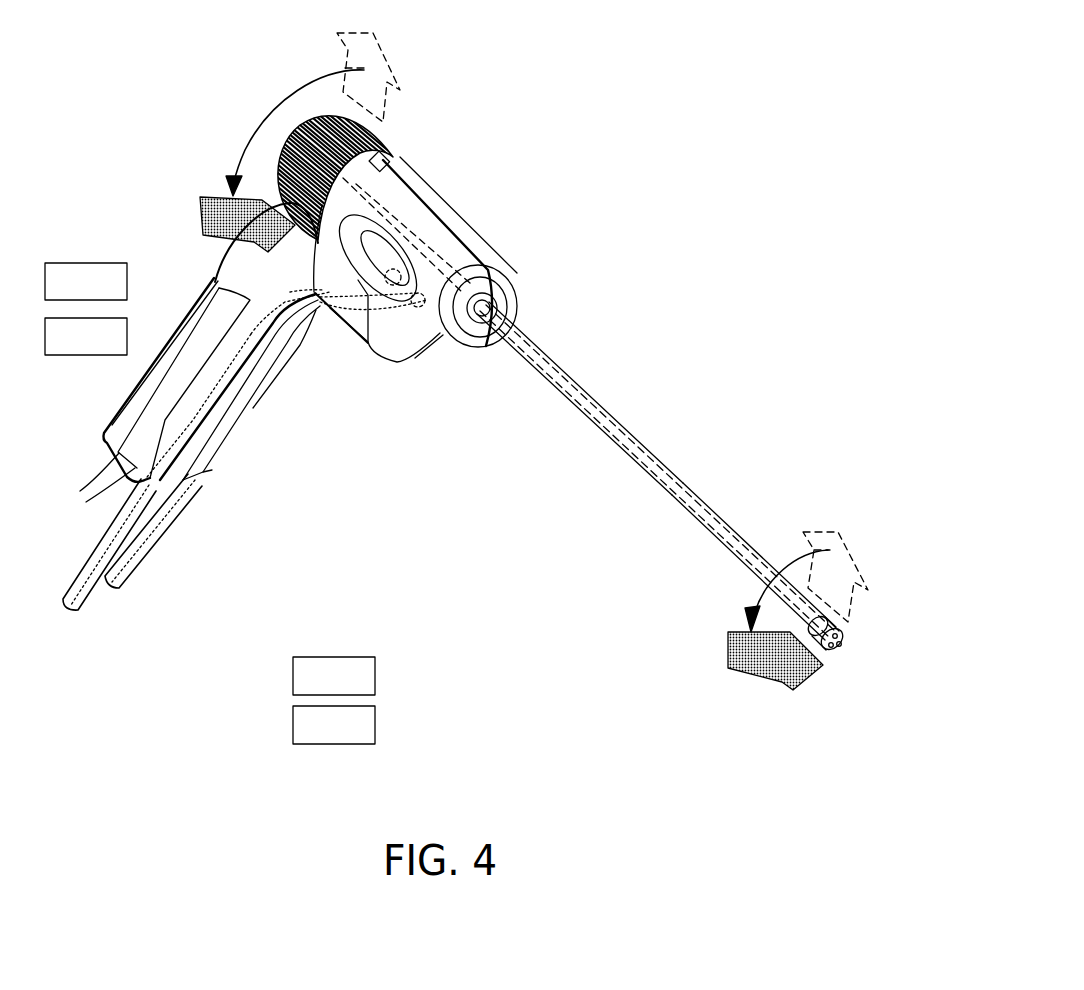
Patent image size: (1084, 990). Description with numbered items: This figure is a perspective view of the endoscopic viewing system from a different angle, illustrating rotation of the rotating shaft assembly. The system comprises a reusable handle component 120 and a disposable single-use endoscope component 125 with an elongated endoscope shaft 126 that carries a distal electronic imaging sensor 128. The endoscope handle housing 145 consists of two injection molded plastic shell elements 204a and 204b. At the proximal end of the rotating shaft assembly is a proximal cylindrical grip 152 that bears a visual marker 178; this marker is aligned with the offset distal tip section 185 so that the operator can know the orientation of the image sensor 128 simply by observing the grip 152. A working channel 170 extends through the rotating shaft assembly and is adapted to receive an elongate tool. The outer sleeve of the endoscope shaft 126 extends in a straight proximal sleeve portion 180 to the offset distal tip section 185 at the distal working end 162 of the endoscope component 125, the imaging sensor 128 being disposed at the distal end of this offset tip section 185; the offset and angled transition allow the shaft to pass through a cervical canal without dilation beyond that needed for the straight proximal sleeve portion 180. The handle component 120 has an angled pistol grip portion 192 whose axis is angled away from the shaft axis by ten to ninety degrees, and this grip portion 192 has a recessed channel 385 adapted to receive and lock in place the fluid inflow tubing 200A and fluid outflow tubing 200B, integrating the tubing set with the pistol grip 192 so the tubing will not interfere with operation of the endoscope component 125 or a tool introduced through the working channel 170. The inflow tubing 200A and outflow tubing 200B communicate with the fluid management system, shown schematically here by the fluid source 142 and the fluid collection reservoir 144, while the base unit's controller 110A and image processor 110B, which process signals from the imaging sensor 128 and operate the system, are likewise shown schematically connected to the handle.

The handle component 120 is at (181, 266).
The proximal cylindrical grip 152 is at (383, 139).
The visual marker 178 is at (300, 238).
The endoscope handle housing 145 is at (425, 358).
The shell element 204a is at (383, 352).
The endoscope component 125 is at (528, 270).
The shell element 204b is at (520, 298).
The working channel 170 is at (643, 466).
The straight proximal sleeve portion 180 is at (690, 488).
The endoscope shaft 126 is at (666, 426).
The distal working end 162 is at (860, 528).
The offset distal tip section 185 is at (840, 644).
The distal electronic imaging sensor 128 is at (835, 655).
The angled pistol grip portion 192 is at (242, 424).
The recessed channel 385 is at (185, 480).
The fluid inflow tubing 200A is at (97, 552).
The fluid outflow tubing 200B is at (140, 546).
The controller 110A is at (57, 318).
The image processor 110B is at (80, 491).
The fluid collection reservoir 144 is at (108, 583).
The fluid source 142 is at (69, 615).